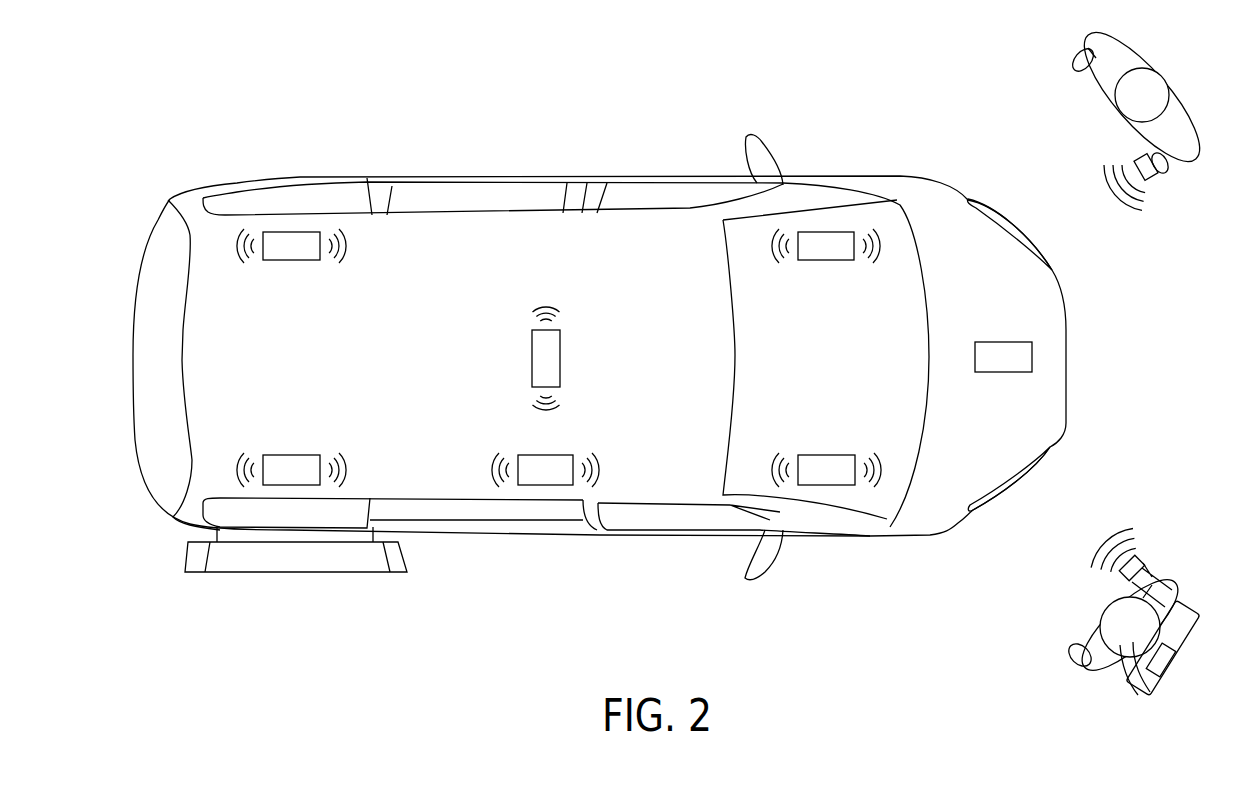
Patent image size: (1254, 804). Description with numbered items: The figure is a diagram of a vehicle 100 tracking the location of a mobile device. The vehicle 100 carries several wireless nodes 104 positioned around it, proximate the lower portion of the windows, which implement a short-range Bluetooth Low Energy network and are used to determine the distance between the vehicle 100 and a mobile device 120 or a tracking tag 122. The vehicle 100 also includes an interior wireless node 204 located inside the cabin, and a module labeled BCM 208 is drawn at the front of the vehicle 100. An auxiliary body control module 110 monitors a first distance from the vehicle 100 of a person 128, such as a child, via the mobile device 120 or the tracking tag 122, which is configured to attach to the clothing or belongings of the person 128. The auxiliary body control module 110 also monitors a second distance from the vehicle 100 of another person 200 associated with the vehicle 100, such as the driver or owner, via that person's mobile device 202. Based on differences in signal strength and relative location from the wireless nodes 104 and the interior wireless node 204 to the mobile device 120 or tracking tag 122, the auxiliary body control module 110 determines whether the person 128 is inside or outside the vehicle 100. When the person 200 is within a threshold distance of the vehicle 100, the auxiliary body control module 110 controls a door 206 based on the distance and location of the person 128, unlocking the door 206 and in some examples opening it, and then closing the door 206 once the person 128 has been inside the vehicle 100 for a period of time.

The vehicle 100 is at (933, 176).
The wireless nodes 104 is at (290, 260).
The auxiliary body control module 110 is at (533, 455).
The interior wireless node 204 is at (560, 358).
The body control module (BCM) 208 is at (1032, 358).
The door 206 is at (292, 573).
The person 200 is at (1187, 107).
The mobile device 202 is at (1153, 183).
The mobile device 120 is at (1140, 563).
The tracking tag 122 is at (1173, 667).
The person 128 is at (1083, 677).